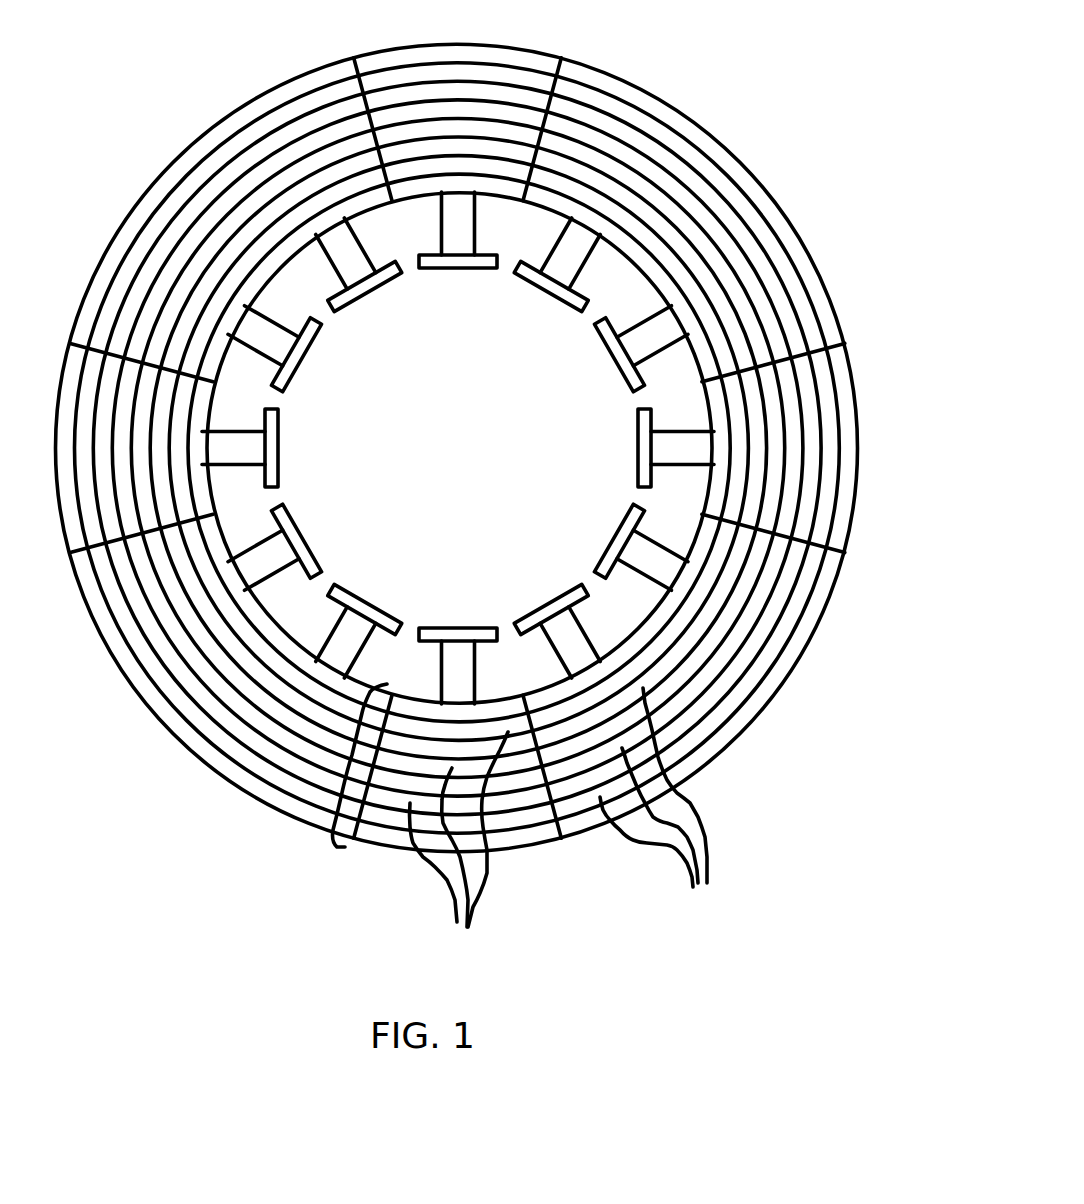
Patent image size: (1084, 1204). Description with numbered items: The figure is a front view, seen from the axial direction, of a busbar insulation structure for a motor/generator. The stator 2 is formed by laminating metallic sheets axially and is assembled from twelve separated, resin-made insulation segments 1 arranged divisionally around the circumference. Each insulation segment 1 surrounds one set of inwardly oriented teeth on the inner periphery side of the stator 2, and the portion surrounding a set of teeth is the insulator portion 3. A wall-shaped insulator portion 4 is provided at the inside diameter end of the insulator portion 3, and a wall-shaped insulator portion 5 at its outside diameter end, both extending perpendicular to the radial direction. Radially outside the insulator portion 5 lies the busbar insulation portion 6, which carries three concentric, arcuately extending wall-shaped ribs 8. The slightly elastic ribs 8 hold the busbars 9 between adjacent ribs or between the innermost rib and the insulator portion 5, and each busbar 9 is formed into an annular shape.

The insulation segment 1 is at (648, 110).
The stator 2 is at (808, 648).
The insulator portion 3 is at (678, 468).
The wall-shaped insulator portion 4 is at (637, 436).
The wall-shaped insulator portion 5 is at (594, 581).
The busbar insulation portion 6 is at (340, 763).
The wall-shaped ribs 8 is at (658, 816).
The busbar 9 is at (459, 860).